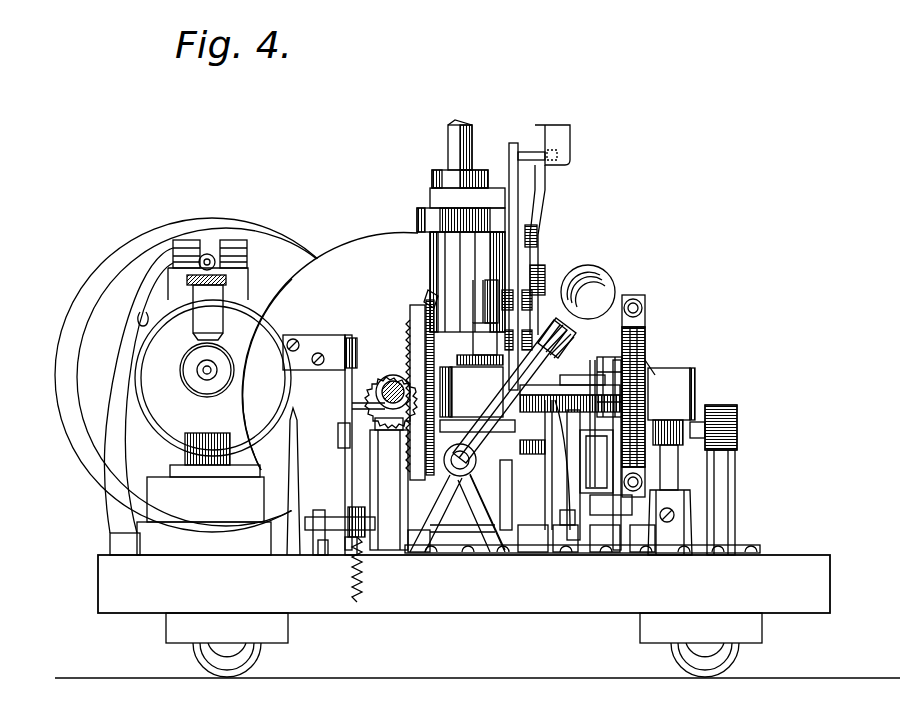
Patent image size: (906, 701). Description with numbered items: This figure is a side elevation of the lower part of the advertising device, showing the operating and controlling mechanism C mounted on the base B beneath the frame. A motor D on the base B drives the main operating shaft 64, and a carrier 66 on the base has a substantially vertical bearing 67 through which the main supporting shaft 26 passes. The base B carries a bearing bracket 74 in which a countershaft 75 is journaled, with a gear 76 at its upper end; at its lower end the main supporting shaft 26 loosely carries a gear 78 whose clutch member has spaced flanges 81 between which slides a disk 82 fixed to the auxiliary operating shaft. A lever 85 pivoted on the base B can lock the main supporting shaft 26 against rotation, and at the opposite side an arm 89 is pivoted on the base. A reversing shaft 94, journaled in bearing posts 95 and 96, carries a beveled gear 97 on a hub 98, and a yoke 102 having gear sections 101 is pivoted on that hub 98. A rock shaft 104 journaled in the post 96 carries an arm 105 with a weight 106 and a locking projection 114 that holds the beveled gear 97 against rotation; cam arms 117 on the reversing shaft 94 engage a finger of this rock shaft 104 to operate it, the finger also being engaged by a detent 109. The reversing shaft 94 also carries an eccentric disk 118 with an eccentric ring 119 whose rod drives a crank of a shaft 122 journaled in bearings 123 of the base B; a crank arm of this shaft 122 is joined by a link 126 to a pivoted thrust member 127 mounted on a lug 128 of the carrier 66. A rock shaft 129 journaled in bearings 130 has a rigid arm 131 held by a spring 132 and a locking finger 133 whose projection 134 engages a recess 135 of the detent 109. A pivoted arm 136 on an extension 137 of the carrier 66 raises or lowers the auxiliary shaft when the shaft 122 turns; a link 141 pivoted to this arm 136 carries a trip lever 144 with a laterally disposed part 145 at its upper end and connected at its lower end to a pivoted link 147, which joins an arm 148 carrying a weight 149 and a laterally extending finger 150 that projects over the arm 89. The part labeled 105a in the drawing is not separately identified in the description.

The main supporting shaft 26 is at (470, 140).
The laterally disposed part 145 is at (570, 126).
The link 141 is at (511, 190).
The trip lever 144 is at (538, 208).
The carrier 66 is at (358, 252).
The vertical bearing 67 is at (440, 247).
The pivoted arm 136 is at (538, 260).
The pivoted link 147 is at (563, 302).
The cam arms 117 is at (538, 285).
The weight 106 is at (608, 282).
The extension 137 is at (436, 296).
The beveled gear 97 is at (412, 318).
The bearing post 96 is at (488, 335).
The hub 98 is at (470, 375).
The eccentric ring 119 is at (645, 310).
The eccentric disk 118 is at (645, 330).
The countershaft 75 is at (640, 350).
The weight 149 is at (640, 375).
The reversing shaft 94 is at (582, 376).
The gear 76 is at (606, 358).
The lug 128 is at (325, 340).
The main operating shaft 64 is at (390, 372).
The yoke 102 is at (412, 380).
The arm 105 is at (555, 392).
The bearing bracket 74 is at (671, 461).
The bearing post 95 is at (700, 422).
The shaft 122 is at (725, 405).
The flanges or ribs 81 is at (495, 430).
The thrust member 127 is at (347, 390).
The gear sections 101 is at (352, 406).
The link 126 is at (340, 430).
The arm 148 is at (600, 482).
The bearings 123 is at (735, 470).
The lever 85 is at (372, 470).
The bearings 130 is at (318, 512).
The projection 134 is at (505, 466).
The disk 82 is at (548, 465).
The rock shaft 129 is at (318, 542).
The rigid arm 131 is at (350, 542).
The spring 132 is at (370, 569).
The locking projection 114 is at (420, 545).
The gear 78 is at (455, 548).
The cross bar 105a is at (470, 534).
The rock shaft 104 is at (524, 545).
The locking finger 133 is at (551, 548).
The recess 135 is at (565, 548).
The detent 109 is at (582, 548).
The arm 89 is at (626, 548).
The laterally extending finger 150 is at (660, 550).
The base B is at (464, 611).
The operating and controlling mechanism C is at (330, 351).
The motor D is at (215, 386).